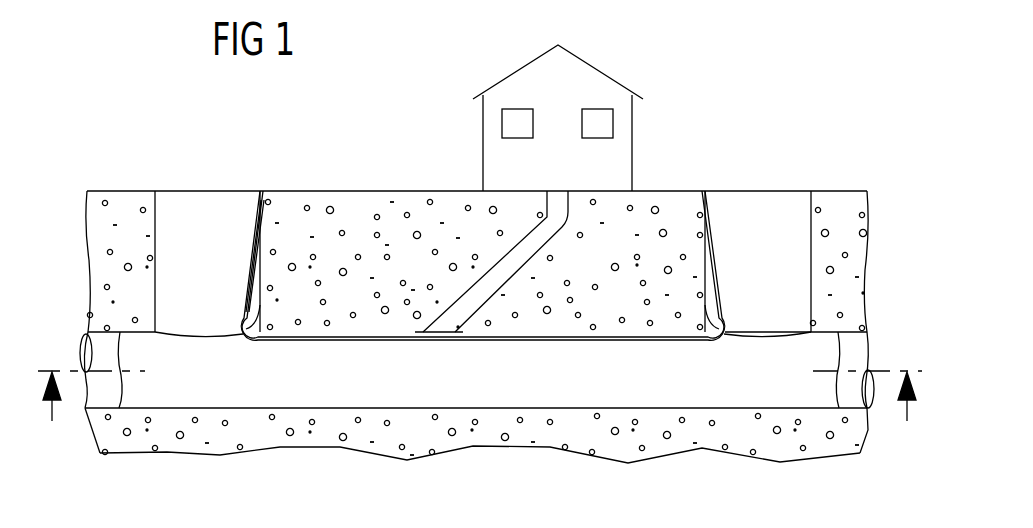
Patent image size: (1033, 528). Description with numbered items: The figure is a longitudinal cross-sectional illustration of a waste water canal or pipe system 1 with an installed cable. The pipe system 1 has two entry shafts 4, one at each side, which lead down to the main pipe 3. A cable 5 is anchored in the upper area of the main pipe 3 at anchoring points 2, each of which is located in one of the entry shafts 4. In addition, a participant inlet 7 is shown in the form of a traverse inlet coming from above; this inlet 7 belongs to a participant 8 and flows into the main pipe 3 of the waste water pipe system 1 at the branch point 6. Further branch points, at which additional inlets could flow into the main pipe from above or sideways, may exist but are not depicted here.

The waste water pipe system 1 is at (320, 418).
The anchoring points 2 is at (258, 201).
The main pipe 3 is at (132, 383).
The entry shafts 4 is at (201, 211).
The cable 5 is at (247, 268).
The branch point 6 is at (447, 322).
The participant inlet 7 is at (502, 272).
The participant 8 is at (598, 82).